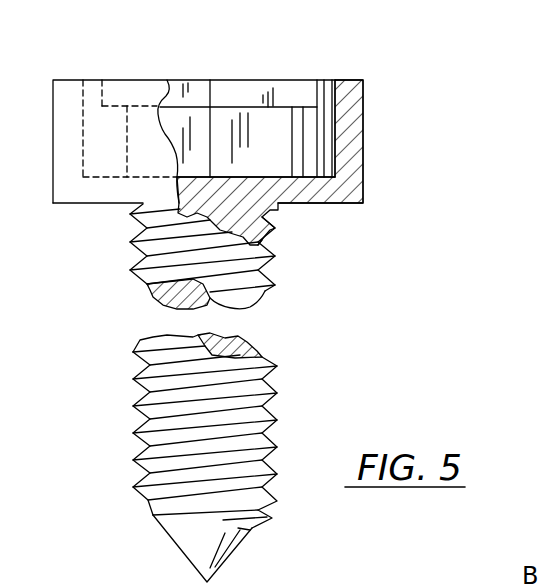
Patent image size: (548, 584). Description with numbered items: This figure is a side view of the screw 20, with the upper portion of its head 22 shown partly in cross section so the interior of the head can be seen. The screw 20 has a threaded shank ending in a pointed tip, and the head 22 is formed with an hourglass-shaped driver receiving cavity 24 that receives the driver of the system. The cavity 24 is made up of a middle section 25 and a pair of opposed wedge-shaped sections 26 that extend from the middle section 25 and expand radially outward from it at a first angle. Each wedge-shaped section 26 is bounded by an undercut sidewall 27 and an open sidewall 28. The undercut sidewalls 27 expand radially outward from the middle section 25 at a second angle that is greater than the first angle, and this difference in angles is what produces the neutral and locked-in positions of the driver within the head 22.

The screw 20 is at (273, 310).
The head 22 is at (355, 182).
The hourglass-shaped driver receiving cavity 24 is at (227, 118).
The middle section 25 is at (212, 83).
The wedge-shaped sections 26 is at (289, 90).
The undercut sidewalls 27 is at (277, 133).
The open sidewalls 28 is at (310, 113).